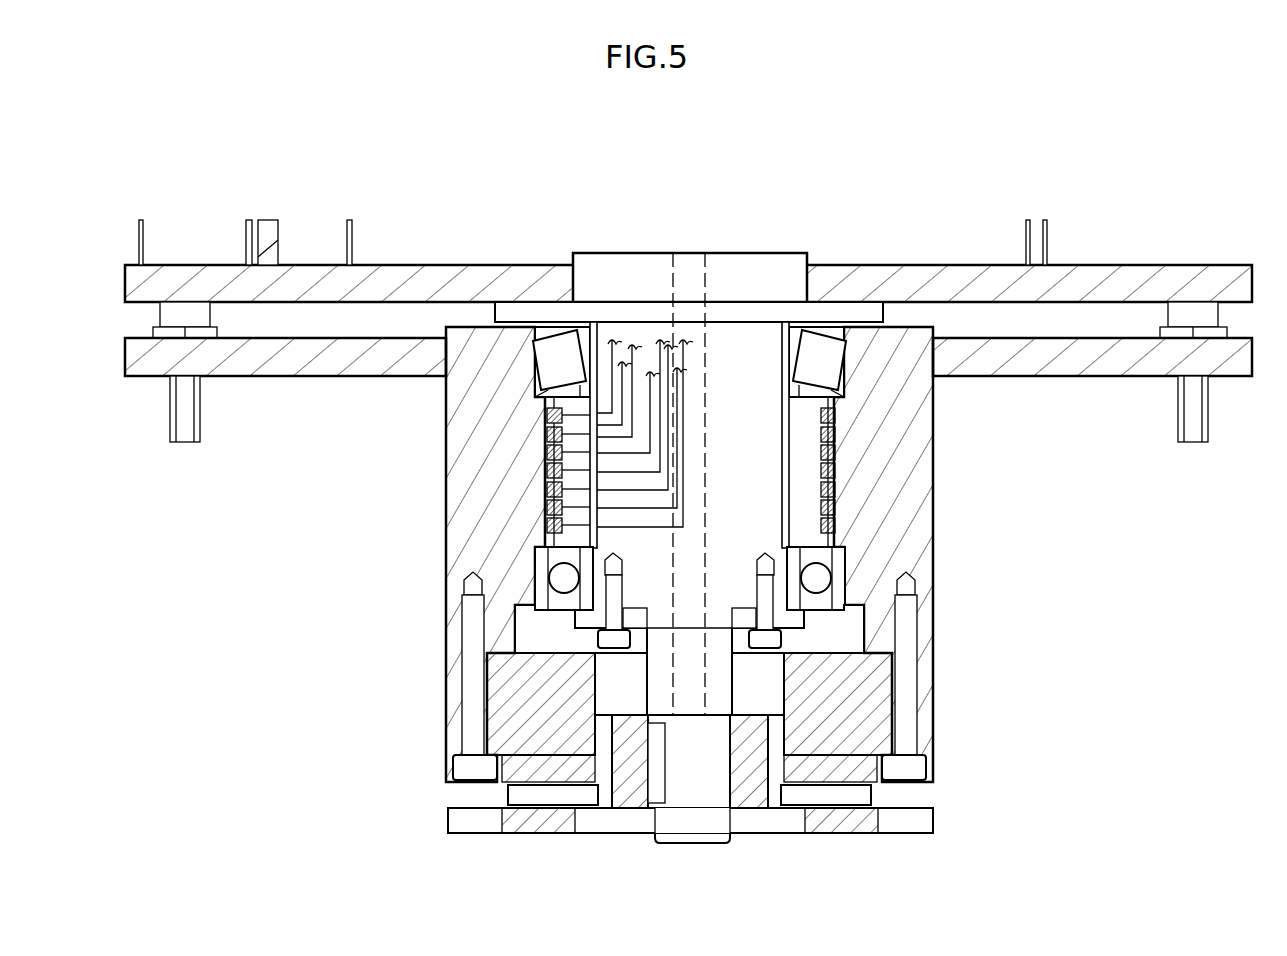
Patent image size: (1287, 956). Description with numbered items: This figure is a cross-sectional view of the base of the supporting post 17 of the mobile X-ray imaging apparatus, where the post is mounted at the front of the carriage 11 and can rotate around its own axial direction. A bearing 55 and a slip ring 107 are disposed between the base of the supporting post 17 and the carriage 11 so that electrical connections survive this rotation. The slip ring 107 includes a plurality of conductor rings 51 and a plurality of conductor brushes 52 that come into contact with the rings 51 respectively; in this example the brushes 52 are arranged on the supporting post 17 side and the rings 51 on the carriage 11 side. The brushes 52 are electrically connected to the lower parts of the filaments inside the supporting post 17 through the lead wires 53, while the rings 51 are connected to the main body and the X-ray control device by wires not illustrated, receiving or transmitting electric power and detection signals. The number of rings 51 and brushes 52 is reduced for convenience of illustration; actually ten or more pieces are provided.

The carriage 11 is at (960, 360).
The supporting post 17 is at (742, 268).
The conductor rings 51 is at (545, 432).
The conductor brushes 52 is at (545, 413).
The lead wires 53 is at (602, 372).
The bearing 55 is at (817, 577).
The slip ring 107 is at (368, 479).